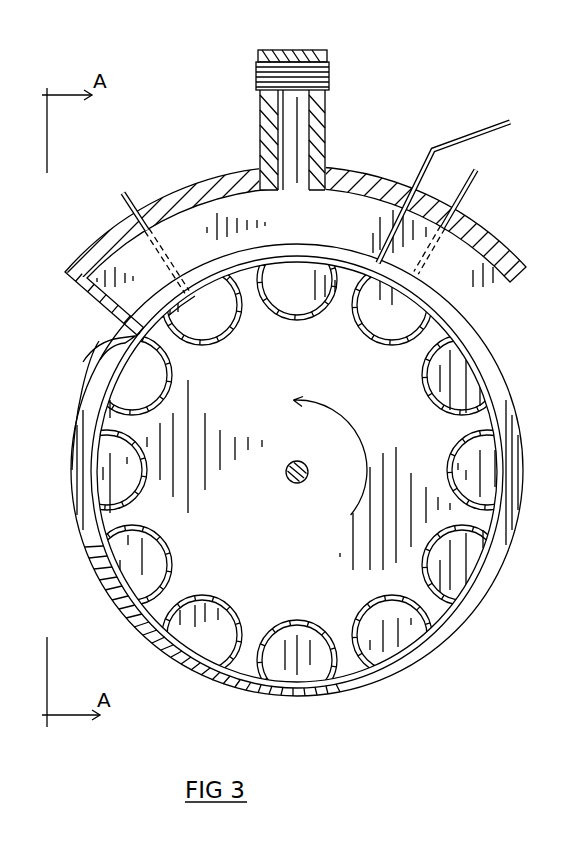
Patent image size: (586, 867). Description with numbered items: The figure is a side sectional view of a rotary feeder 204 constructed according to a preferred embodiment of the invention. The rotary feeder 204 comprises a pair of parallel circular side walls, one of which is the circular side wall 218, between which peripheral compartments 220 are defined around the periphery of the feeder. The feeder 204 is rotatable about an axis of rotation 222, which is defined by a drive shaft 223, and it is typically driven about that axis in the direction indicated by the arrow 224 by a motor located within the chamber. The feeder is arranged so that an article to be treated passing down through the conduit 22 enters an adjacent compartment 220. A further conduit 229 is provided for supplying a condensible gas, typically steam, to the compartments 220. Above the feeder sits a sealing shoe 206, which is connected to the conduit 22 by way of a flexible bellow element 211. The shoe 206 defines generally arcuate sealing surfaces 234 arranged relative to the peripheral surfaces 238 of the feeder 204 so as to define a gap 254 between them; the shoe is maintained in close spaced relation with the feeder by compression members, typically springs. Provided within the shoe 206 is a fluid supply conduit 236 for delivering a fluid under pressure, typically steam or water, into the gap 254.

The conduit 22 is at (327, 53).
The flexible bellow element 211 is at (258, 80).
The sealing shoe 206 is at (351, 171).
The conduit 229 is at (494, 133).
The fluid supply conduit 236 is at (127, 193).
The arcuate sealing surfaces 234 is at (137, 317).
The peripheral surfaces 238 is at (105, 345).
The gap 254 is at (176, 320).
The arrow 224 is at (333, 402).
The axis of rotation 222 is at (289, 480).
The drive shaft 223 is at (301, 485).
The peripheral compartments 220 is at (117, 557).
The circular side wall 218 is at (503, 555).
The rotary feeder 204 is at (427, 679).